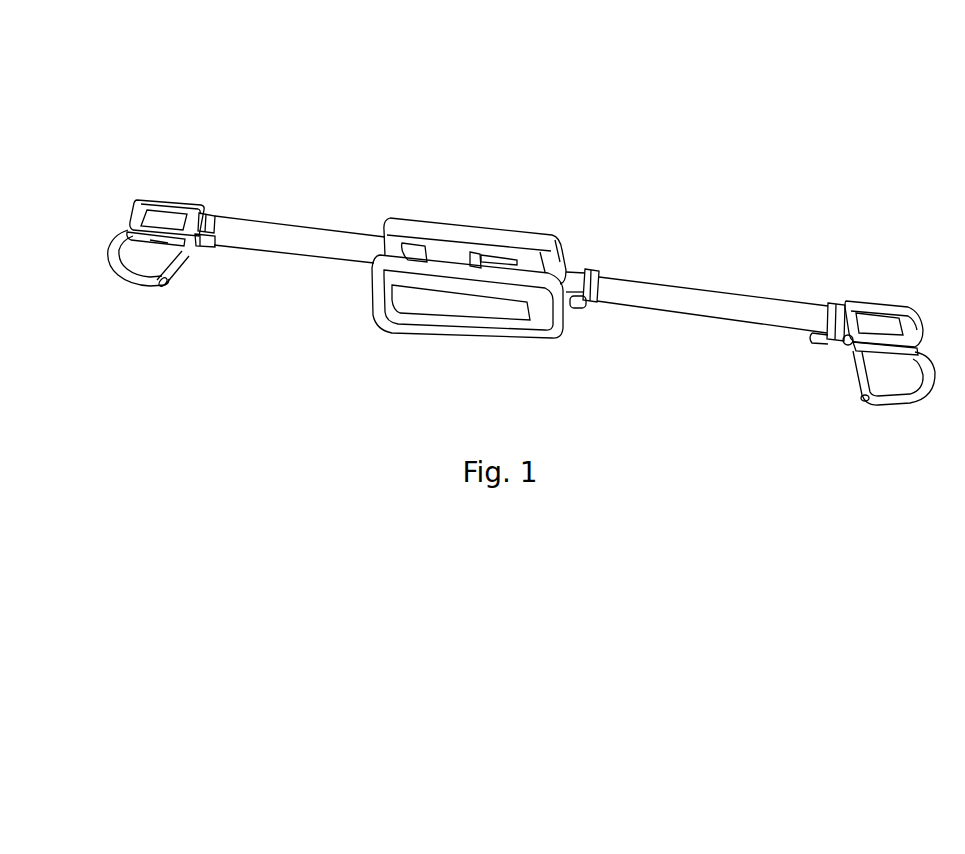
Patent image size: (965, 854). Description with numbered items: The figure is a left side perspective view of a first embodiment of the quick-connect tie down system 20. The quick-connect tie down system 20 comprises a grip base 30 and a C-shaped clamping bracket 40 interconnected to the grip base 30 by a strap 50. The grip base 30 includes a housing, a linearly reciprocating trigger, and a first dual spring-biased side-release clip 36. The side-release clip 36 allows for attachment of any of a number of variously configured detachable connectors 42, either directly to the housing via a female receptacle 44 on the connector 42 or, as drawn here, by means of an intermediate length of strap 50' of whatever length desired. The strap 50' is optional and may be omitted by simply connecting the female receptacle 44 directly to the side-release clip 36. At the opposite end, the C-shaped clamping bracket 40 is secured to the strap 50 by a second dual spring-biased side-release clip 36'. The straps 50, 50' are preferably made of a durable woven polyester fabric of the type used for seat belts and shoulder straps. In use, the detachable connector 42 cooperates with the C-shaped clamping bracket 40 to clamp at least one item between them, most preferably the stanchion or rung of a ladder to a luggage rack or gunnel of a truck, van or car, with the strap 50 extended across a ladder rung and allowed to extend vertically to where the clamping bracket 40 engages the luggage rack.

The quick-connect tie down system 20 is at (563, 187).
The grip base 30 is at (462, 222).
The side-release clip 36 is at (637, 237).
The side-release clip 36' is at (205, 281).
The C-shaped clamping bracket 40 is at (170, 201).
The detachable connector 42 is at (887, 299).
The female receptacle 44 is at (829, 300).
The strap 50 is at (299, 197).
The strap 50' is at (712, 271).